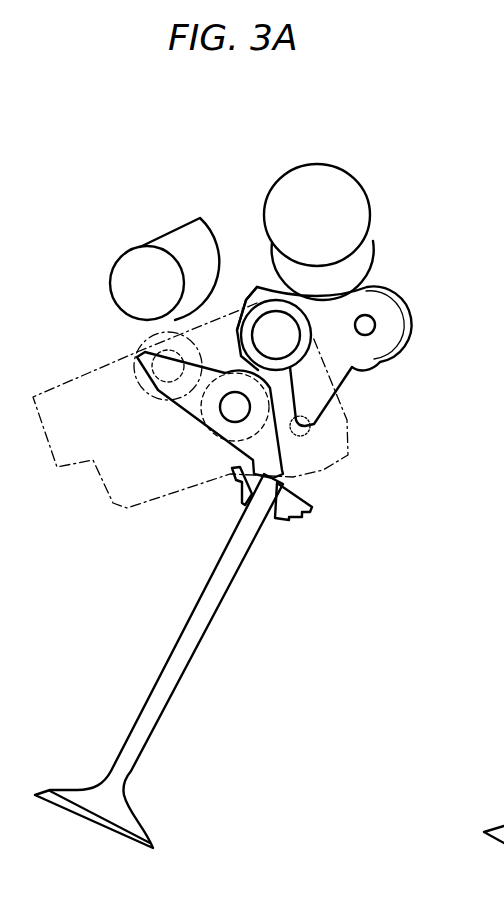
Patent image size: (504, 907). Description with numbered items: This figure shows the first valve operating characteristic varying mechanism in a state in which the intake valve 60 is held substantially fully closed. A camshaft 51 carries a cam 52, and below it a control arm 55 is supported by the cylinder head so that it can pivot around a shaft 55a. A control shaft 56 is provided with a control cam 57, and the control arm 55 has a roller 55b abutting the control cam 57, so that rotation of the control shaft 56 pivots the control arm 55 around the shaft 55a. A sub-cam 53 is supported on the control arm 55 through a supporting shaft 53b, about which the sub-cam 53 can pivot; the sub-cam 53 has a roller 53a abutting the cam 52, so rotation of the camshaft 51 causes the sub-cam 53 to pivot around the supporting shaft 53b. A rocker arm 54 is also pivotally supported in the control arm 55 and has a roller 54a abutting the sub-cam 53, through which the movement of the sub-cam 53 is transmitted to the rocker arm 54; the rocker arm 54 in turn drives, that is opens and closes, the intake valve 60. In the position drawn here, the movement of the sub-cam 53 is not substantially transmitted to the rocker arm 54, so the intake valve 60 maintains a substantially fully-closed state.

The camshaft 51 is at (319, 163).
The cam 52 is at (378, 244).
The sub-cam 53 is at (362, 370).
The roller 53a is at (404, 312).
The supporting shaft 53b is at (251, 300).
The rocker arm 54 is at (290, 462).
The roller 54a is at (200, 406).
The control arm 55 is at (121, 528).
The shaft 55a is at (311, 427).
The roller 55b is at (132, 360).
The control shaft 56 is at (118, 260).
The control cam 57 is at (168, 230).
The intake valve 60 is at (221, 598).